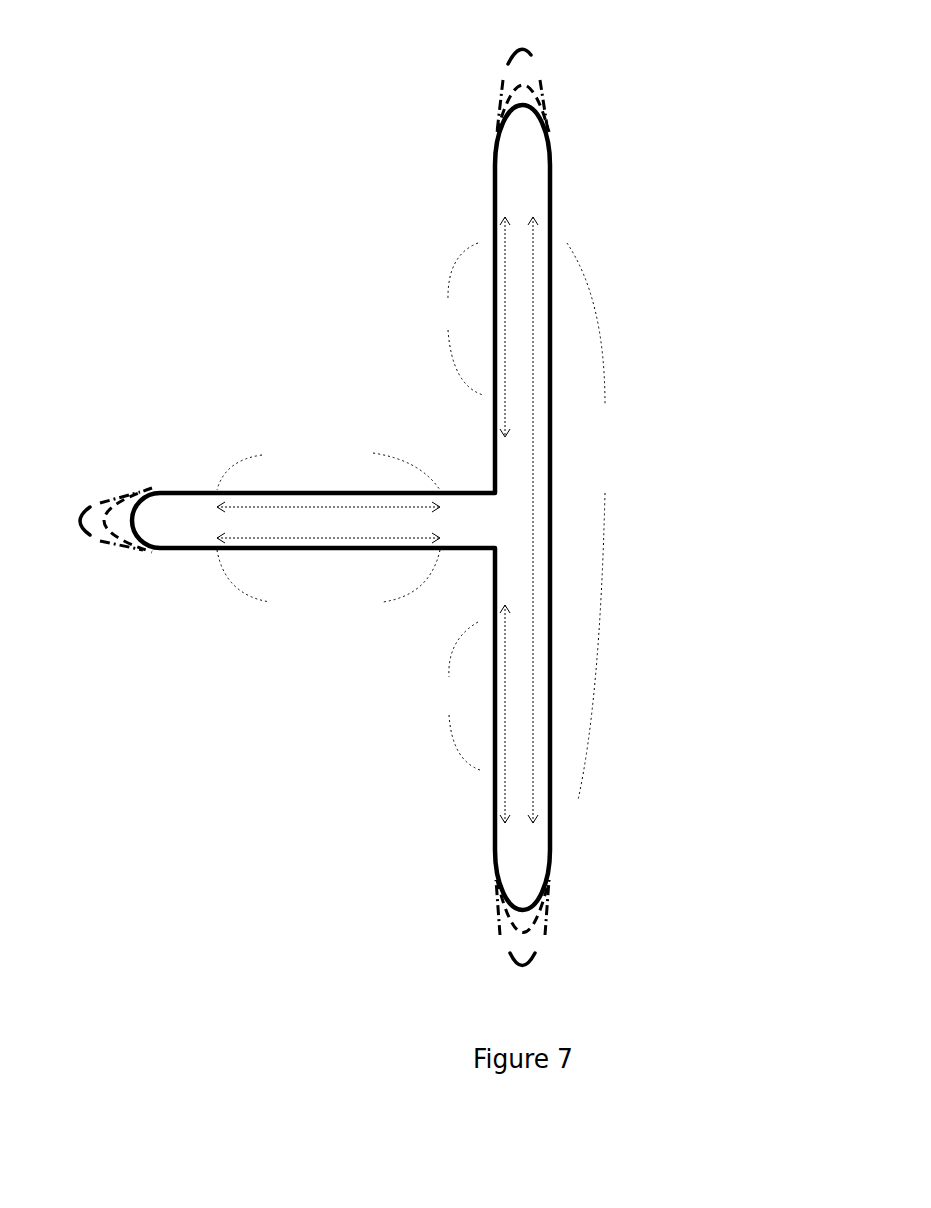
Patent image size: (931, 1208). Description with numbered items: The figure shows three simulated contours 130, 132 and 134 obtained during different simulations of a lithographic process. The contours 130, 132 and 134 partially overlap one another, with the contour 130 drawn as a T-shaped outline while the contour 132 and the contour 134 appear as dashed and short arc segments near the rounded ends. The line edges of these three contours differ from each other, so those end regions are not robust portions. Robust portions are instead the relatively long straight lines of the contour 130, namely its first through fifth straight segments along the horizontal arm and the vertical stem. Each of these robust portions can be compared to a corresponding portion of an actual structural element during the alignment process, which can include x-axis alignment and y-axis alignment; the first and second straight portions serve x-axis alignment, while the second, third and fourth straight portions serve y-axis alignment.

The simulated contour 130 is at (520, 530).
The simulated contour 132 is at (520, 92).
The simulated contour 134 is at (515, 48).